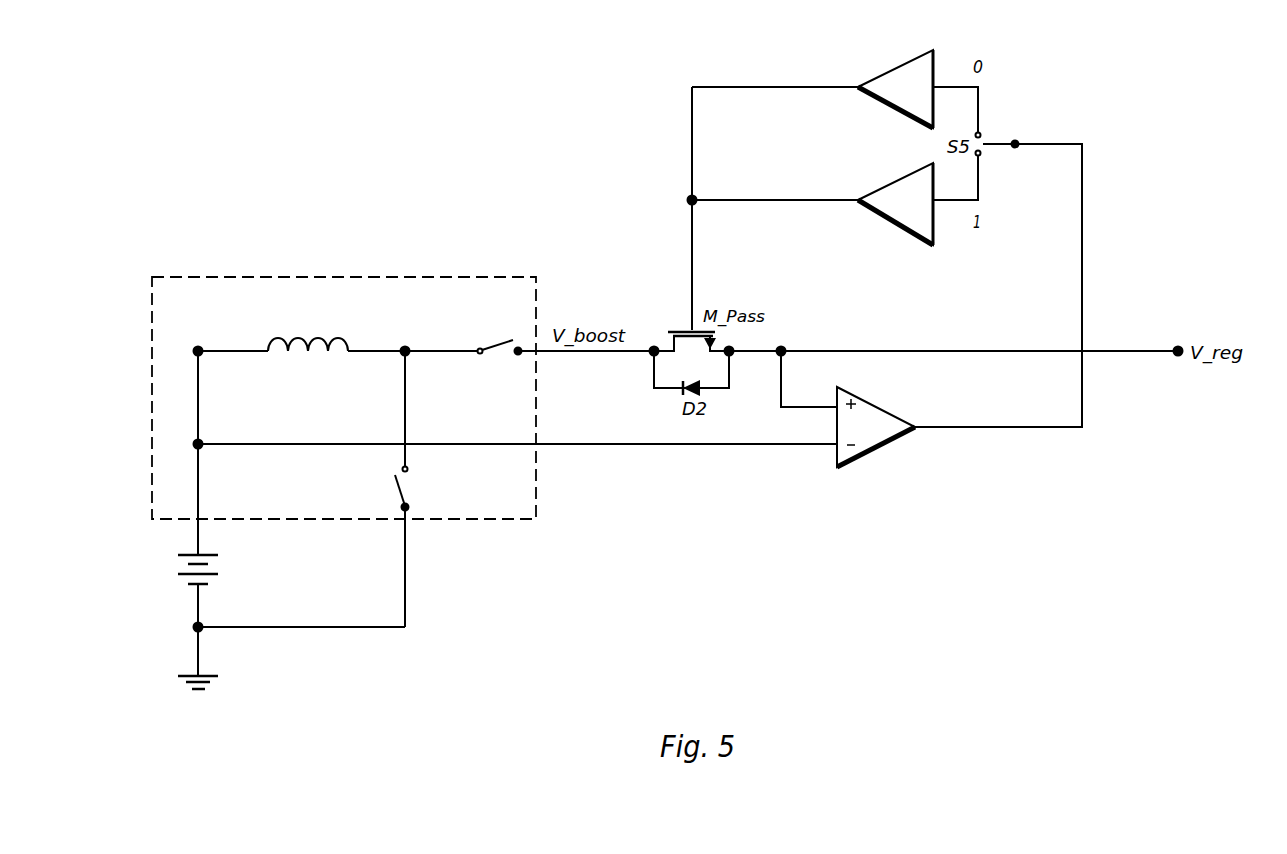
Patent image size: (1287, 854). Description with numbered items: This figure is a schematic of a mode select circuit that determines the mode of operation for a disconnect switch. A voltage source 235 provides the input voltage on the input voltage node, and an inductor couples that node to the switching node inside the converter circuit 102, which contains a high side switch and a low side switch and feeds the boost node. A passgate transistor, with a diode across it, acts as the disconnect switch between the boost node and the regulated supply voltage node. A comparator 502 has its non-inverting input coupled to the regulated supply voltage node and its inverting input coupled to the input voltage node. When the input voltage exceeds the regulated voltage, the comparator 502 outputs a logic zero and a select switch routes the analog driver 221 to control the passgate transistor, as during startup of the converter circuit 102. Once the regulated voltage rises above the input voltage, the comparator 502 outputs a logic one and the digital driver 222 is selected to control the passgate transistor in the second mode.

The converter circuit 102 is at (549, 256).
The voltage source 235 is at (168, 581).
The analog driver 221 is at (898, 57).
The digital driver 222 is at (895, 228).
The comparator 502 is at (1070, 486).